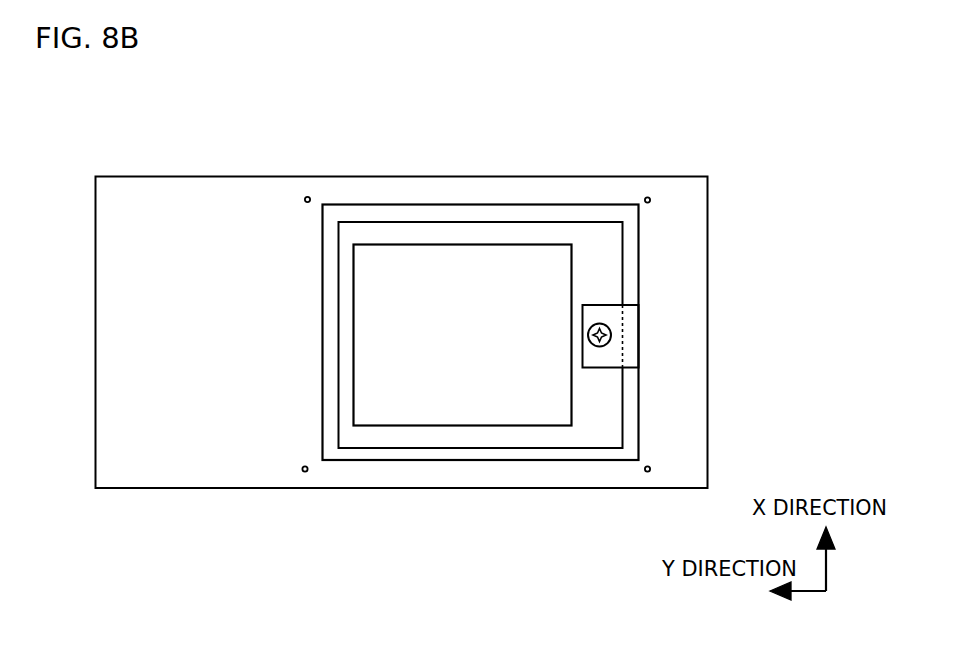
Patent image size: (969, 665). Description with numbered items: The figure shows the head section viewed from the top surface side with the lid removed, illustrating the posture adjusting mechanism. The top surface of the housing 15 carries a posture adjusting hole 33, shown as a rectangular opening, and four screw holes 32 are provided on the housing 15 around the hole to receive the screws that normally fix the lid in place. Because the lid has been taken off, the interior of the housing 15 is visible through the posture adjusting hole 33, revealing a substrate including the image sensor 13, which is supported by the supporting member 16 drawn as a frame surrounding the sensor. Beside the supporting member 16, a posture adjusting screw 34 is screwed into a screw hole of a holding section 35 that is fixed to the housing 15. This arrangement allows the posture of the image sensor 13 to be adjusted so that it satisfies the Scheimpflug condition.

The housing 15 is at (150, 188).
The screw holes 32 is at (308, 196).
The posture adjusting hole 33 is at (381, 210).
The supporting member 16 is at (505, 230).
The image sensor 13 is at (556, 250).
The posture adjusting screw 34 is at (611, 333).
The holding section 35 is at (606, 352).